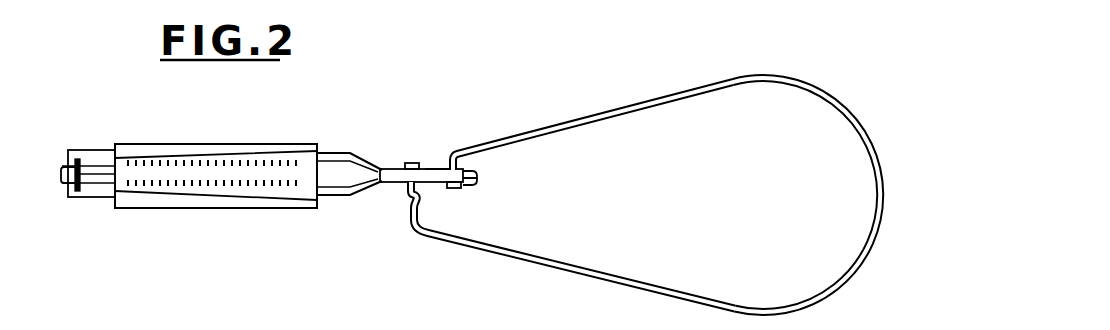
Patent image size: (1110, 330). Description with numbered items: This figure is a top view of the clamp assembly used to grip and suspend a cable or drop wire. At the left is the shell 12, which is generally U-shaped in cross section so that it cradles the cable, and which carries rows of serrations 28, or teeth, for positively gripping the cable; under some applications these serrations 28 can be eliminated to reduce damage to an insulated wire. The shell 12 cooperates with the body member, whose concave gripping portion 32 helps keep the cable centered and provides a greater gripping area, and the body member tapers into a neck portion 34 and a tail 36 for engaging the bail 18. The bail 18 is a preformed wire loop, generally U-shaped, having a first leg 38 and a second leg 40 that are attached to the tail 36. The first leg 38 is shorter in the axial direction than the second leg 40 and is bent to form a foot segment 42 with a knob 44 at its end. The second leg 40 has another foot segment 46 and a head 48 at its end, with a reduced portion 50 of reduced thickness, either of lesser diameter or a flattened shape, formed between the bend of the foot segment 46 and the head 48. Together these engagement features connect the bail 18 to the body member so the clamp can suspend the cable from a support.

The shell 12 is at (132, 200).
The serrations 28 is at (213, 183).
The concave gripping portion 32 is at (340, 158).
The neck portion 34 is at (366, 162).
The tail 36 is at (437, 167).
The first leg 38 is at (592, 120).
The second leg 40 is at (620, 277).
The foot segment 42 is at (455, 158).
The knob 44 is at (455, 195).
The foot segment 46 is at (410, 228).
The head 48 is at (412, 162).
The reduced portion 50 is at (407, 202).
The bail 18 is at (768, 195).